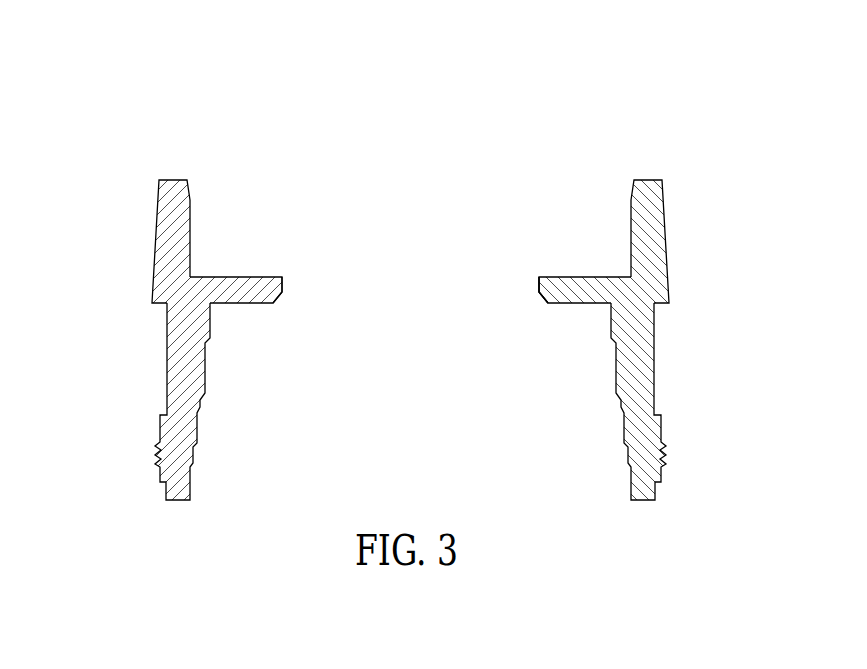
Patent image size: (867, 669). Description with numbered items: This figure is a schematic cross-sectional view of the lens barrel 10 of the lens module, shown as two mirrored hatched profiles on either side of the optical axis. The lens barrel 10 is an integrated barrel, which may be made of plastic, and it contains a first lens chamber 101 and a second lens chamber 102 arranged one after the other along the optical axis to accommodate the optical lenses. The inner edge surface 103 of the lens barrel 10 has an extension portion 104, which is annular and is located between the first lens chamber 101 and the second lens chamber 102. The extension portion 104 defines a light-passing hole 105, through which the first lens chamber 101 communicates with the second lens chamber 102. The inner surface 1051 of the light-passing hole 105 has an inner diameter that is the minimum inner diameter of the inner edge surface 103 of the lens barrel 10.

The lens barrel 10 is at (273, 117).
The first lens chamber 101 is at (598, 250).
The second lens chamber 102 is at (573, 385).
The inner edge surface 103 is at (190, 245).
The extension portion 104 is at (260, 287).
The light-passing hole 105 is at (415, 287).
The inner surface of the light-passing hole 1051 is at (537, 283).